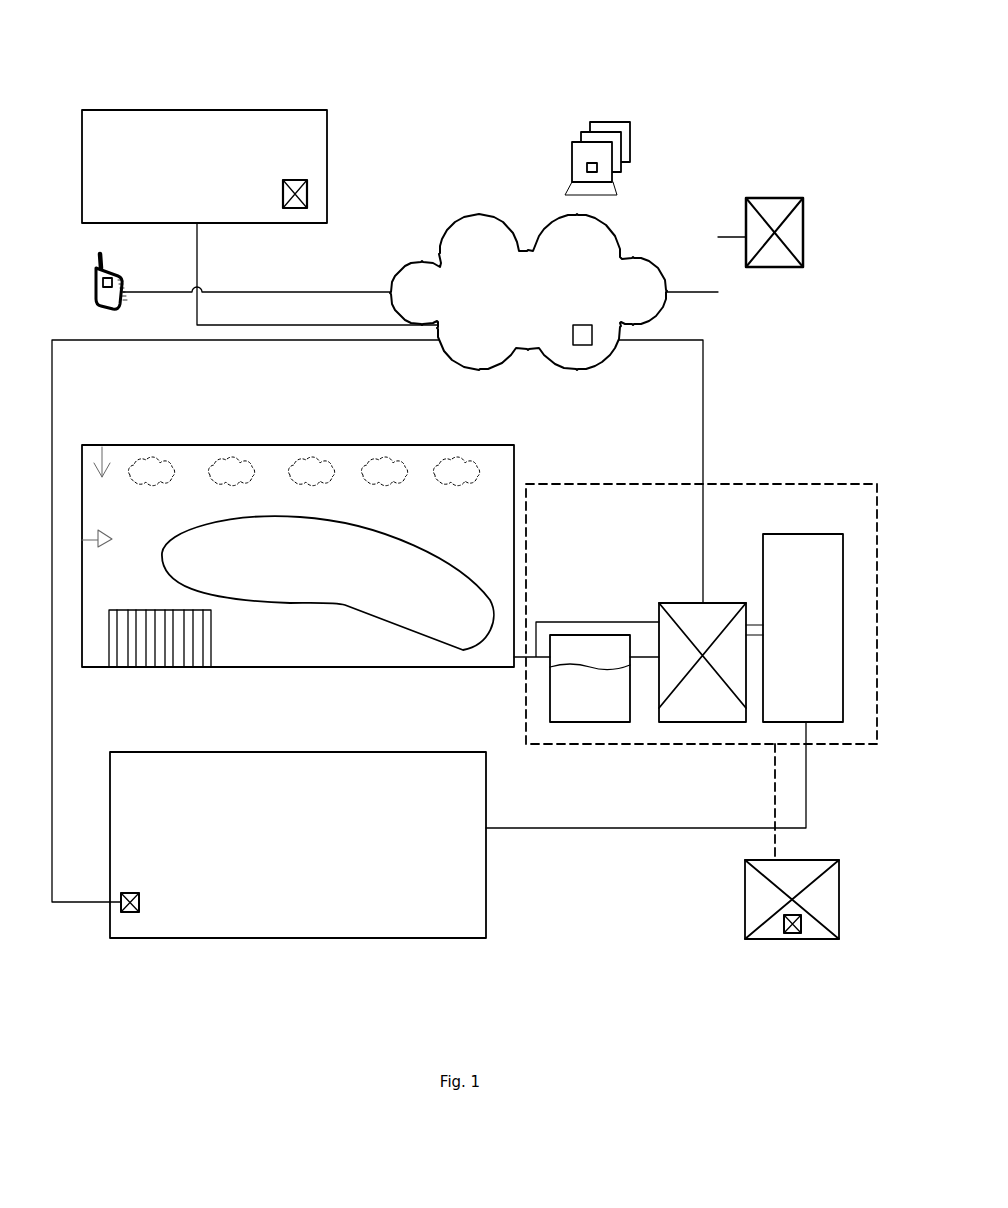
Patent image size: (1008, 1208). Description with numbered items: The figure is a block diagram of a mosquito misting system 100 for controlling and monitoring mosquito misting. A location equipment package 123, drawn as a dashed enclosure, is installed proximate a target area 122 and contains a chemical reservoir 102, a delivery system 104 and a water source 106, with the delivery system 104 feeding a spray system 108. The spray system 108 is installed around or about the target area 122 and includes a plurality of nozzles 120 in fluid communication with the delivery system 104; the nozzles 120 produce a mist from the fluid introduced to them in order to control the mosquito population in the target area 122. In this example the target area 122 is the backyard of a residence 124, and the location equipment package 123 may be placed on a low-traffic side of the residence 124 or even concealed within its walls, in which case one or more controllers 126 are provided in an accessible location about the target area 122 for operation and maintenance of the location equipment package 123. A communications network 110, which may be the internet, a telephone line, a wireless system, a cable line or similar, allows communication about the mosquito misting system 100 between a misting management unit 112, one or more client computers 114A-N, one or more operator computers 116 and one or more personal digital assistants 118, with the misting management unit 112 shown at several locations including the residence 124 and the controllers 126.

The mosquito misting system 100 is at (746, 53).
The chemical reservoir 102 is at (584, 738).
The delivery system 104 is at (698, 738).
The water source 106 is at (798, 534).
The spray system 108 is at (143, 426).
The communications network 110 is at (488, 215).
The misting management unit 112 is at (297, 173).
The client computers 114A-N is at (603, 122).
The operator computers 116 is at (206, 104).
The personal digital assistants 118 is at (93, 288).
The nozzles 120 is at (112, 548).
The target area 122 is at (328, 583).
The location equipment package 123 is at (853, 756).
The residence 124 is at (375, 938).
The controllers 126 is at (745, 908).